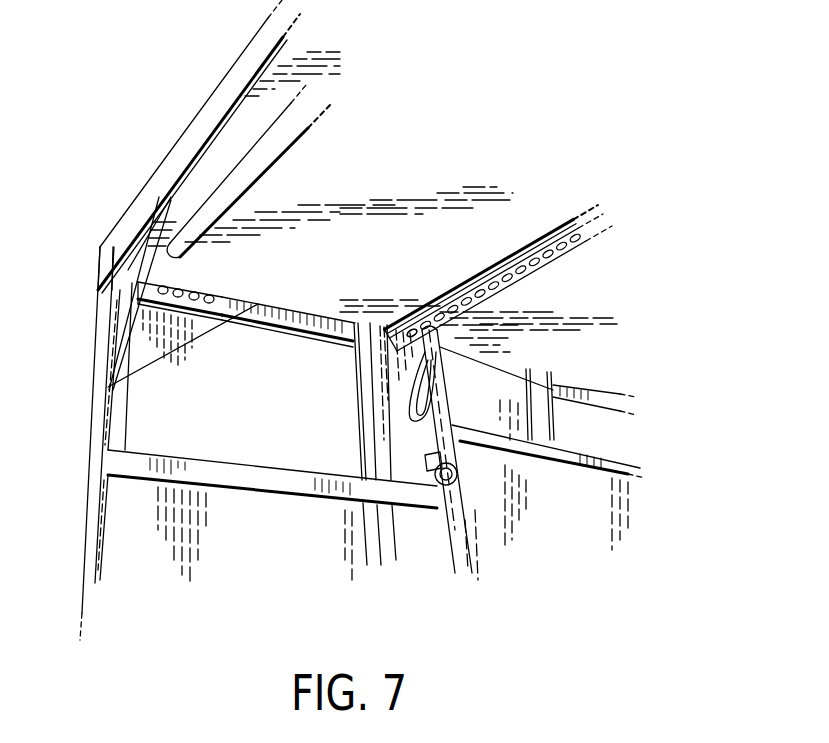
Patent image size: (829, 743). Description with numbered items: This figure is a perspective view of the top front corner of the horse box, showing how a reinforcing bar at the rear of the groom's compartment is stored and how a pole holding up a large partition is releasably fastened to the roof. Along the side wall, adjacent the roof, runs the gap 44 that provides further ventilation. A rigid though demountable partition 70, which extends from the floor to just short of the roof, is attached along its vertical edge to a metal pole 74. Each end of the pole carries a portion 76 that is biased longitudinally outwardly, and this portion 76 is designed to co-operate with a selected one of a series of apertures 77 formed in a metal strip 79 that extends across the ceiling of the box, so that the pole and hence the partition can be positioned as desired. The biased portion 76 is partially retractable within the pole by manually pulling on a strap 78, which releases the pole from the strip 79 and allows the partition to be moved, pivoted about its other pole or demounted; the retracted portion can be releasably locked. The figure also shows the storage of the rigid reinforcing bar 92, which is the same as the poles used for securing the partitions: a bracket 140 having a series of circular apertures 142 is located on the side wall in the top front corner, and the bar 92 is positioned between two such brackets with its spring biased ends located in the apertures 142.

The gap 44 is at (155, 415).
The partition 70 is at (569, 552).
The metal pole 74 is at (436, 408).
The biased portion 76 is at (437, 350).
The aperture 77 is at (499, 278).
The strap 78 is at (406, 417).
The metal strip 79 is at (515, 274).
The reinforcing bar 92 is at (267, 154).
The bracket 140 is at (192, 303).
The circular aperture 142 is at (214, 299).